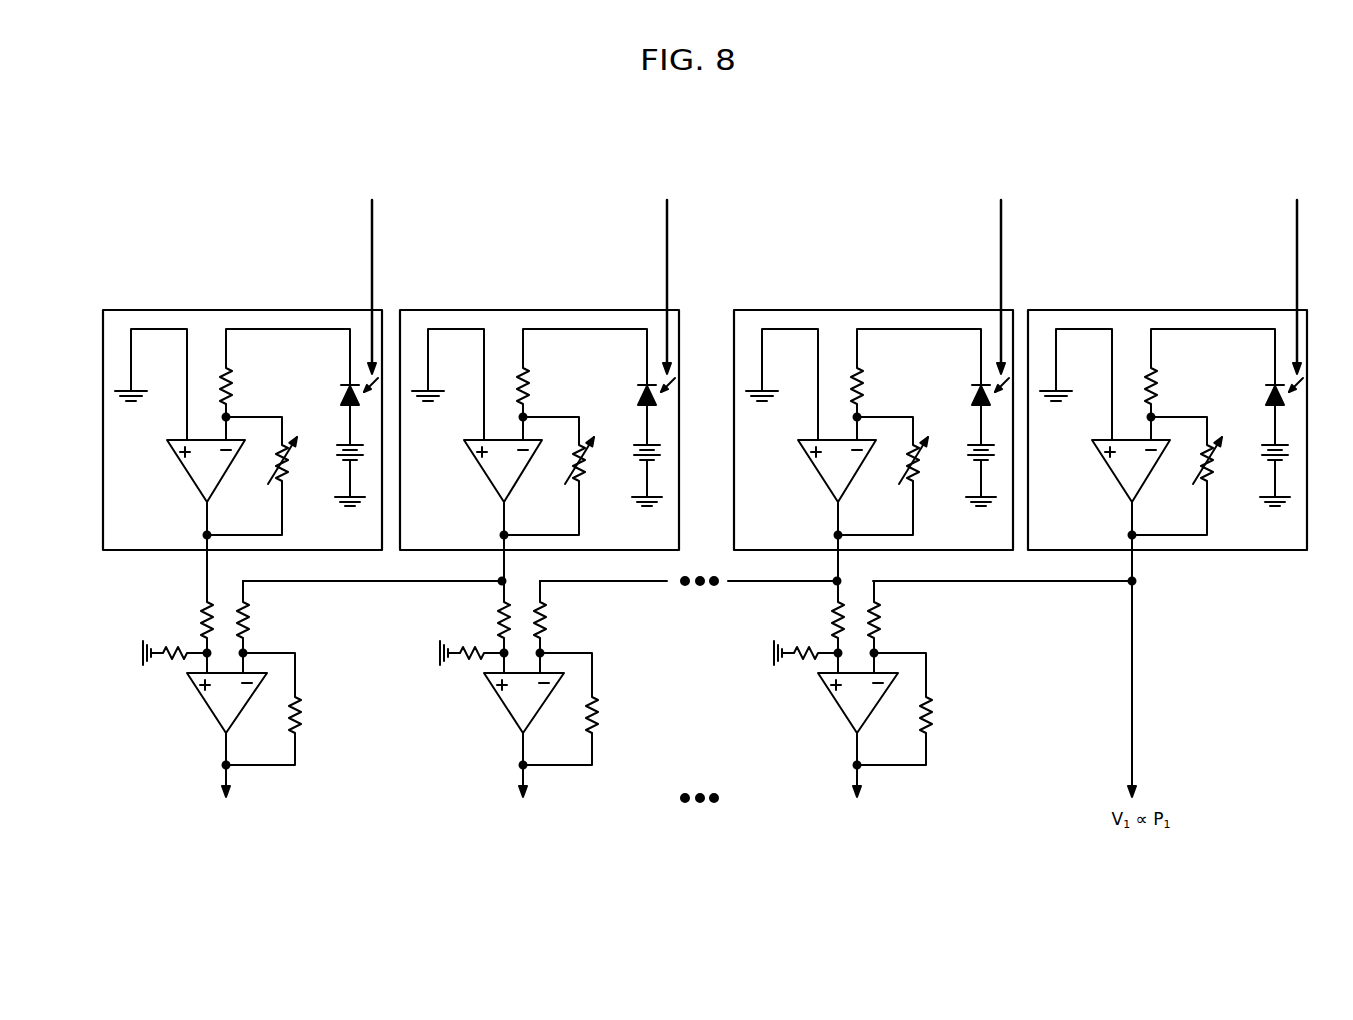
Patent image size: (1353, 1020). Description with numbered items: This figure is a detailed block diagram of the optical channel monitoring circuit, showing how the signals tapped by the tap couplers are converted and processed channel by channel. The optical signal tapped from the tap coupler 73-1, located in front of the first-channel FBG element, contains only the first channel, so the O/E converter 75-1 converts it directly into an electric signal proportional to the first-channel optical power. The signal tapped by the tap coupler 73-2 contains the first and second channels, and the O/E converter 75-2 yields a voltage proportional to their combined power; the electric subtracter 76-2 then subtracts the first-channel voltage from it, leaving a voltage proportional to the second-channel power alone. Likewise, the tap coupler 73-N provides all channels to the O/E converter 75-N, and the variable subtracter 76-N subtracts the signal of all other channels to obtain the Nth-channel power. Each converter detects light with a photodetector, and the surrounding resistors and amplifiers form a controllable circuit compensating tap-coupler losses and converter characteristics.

The O/E converter 75-N is at (183, 310).
The O/E converter 75-2 is at (816, 310).
The O/E converter 75-1 is at (1130, 310).
The variable subtracter 76-N is at (208, 710).
The electric subtracter 76-2 is at (840, 710).
The tap coupler 73-N is at (381, 264).
The tap coupler 73-2 is at (990, 264).
The tap coupler 73-1 is at (1252, 264).